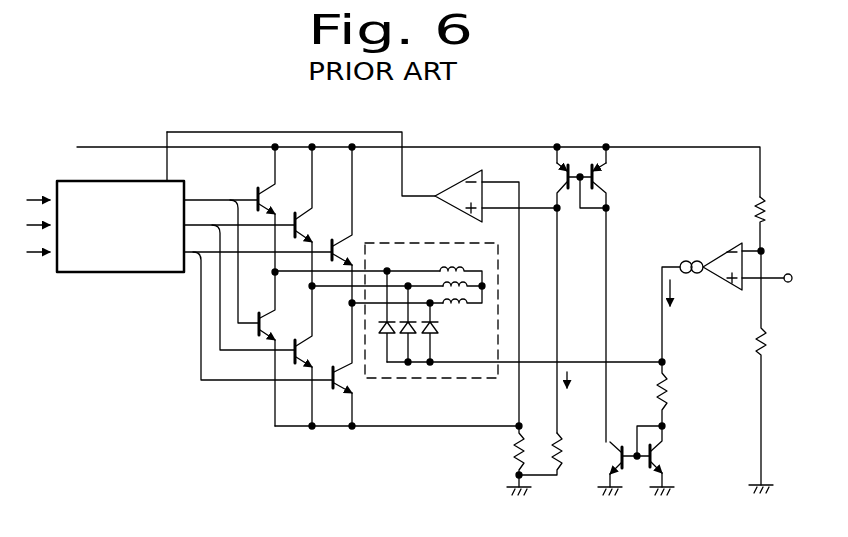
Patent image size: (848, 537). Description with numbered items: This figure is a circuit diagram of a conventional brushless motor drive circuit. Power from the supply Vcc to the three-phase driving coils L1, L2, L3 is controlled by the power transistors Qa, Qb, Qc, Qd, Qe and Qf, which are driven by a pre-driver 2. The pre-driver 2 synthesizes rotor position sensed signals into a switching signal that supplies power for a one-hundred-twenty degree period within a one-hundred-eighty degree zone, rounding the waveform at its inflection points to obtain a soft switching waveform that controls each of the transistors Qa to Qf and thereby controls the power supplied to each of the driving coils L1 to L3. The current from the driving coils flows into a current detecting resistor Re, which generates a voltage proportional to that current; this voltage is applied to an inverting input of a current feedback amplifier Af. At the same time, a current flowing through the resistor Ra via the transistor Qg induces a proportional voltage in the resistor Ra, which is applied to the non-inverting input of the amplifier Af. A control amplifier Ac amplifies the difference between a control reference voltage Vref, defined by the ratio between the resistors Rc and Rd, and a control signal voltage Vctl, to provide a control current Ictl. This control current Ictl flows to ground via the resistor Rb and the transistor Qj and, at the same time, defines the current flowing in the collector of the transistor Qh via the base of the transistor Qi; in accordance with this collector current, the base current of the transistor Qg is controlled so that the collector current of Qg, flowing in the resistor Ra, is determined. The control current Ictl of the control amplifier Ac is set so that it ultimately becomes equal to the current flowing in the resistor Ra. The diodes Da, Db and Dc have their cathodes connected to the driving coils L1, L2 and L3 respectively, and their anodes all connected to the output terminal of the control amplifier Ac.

The pre-driver 2 is at (146, 258).
The supply voltage Vcc is at (416, 160).
The power transistor Qa is at (268, 198).
The power transistor Qb is at (302, 220).
The power transistor Qc is at (343, 245).
The power transistor Qd is at (257, 330).
The power transistor Qe is at (290, 358).
The power transistor Qf is at (338, 392).
The transistor Qg is at (562, 178).
The transistor Qh is at (605, 178).
The transistor Qi is at (613, 457).
The transistor Qj is at (658, 453).
The diode Da is at (387, 337).
The diode Db is at (413, 337).
The diode Dc is at (435, 337).
The three-phase driving coil L1 is at (462, 268).
The three-phase driving coil L2 is at (465, 279).
The three-phase driving coil L3 is at (468, 306).
The current feedback amplifier Af is at (462, 190).
The control amplifier Ac is at (722, 260).
The resistor Ra is at (558, 454).
The resistor Rb is at (678, 394).
The resistor Rc is at (776, 224).
The resistor Rd is at (777, 372).
The current detecting resistor Re is at (502, 459).
The control reference voltage Vref is at (778, 257).
The control signal voltage Vctl is at (780, 295).
The control current Ictl is at (635, 353).